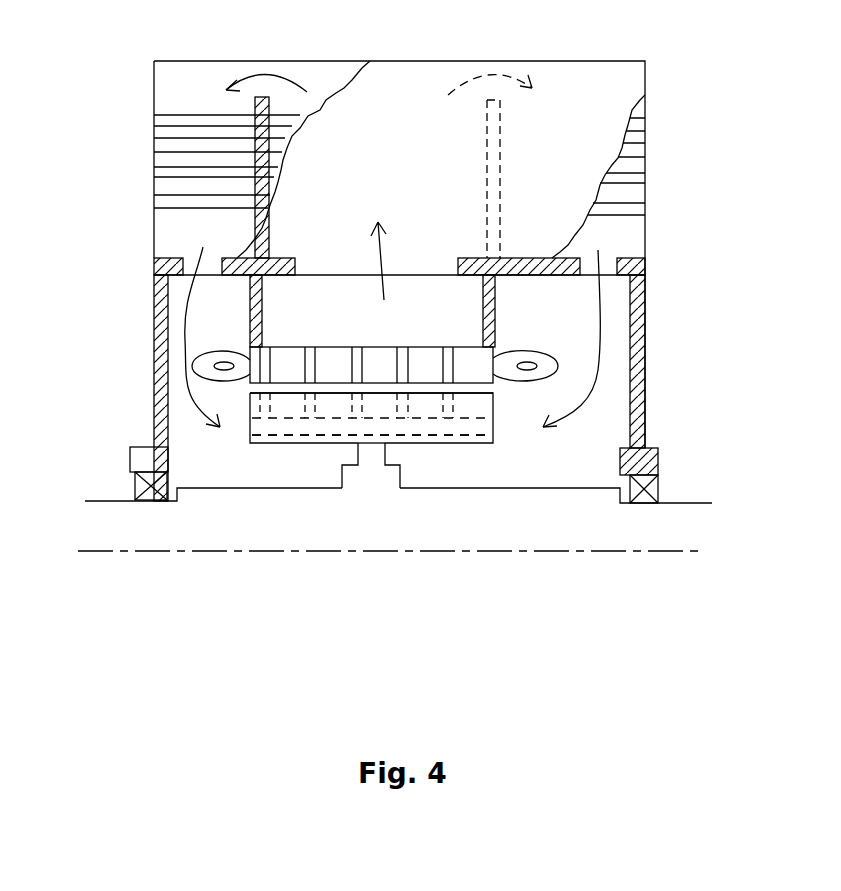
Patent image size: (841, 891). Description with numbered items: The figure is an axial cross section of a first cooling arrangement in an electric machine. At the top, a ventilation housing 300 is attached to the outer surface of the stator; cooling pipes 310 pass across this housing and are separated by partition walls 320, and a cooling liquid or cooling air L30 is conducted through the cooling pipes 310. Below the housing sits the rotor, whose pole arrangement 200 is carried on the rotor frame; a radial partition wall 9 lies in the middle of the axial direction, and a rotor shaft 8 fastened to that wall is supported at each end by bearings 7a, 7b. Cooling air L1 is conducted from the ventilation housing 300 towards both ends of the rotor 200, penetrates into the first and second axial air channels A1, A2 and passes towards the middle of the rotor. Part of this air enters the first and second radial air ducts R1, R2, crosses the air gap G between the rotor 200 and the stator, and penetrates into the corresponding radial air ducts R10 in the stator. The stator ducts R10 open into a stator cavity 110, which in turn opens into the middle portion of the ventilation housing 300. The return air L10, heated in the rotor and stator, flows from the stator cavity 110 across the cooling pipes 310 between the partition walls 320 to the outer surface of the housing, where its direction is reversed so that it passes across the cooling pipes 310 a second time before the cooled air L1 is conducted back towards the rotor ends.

The ventilation housing 300 is at (405, 75).
The cooling pipes 310 is at (185, 118).
The partition walls 320 is at (490, 142).
The cooling liquid or cooling air L30 is at (143, 179).
The stator cavity 110 is at (463, 324).
The radial air ducts in the stator R10 is at (307, 365).
The first radial air duct R1 is at (267, 405).
The second radial air duct R2 is at (371, 441).
The first axial air channel A1 is at (490, 425).
The second axial air channel A2 is at (461, 465).
The air gap G is at (497, 388).
The cooling air L1 is at (185, 328).
The return air L10 is at (381, 243).
The bearing 7a is at (133, 481).
The bearing 7b is at (660, 485).
The rotor shaft 8 is at (528, 534).
The radial partition wall 9 is at (383, 477).
The pole arrangement 200 is at (432, 405).